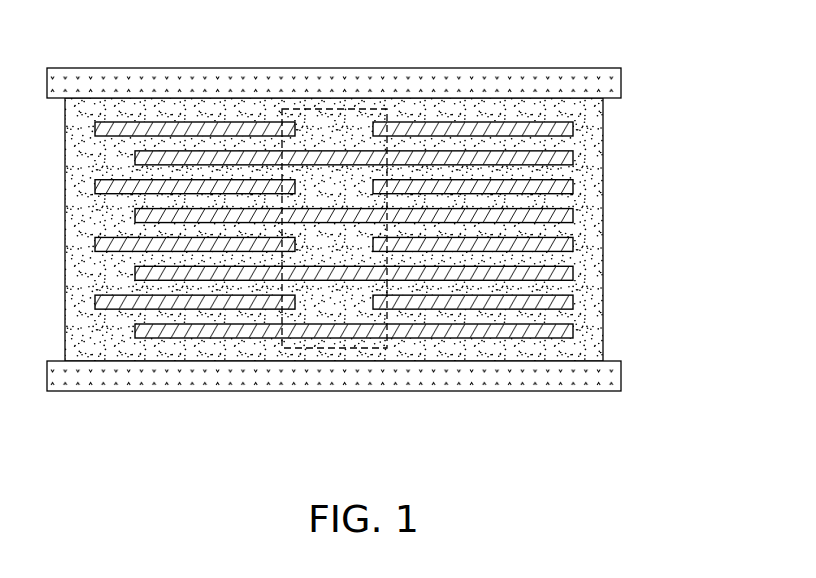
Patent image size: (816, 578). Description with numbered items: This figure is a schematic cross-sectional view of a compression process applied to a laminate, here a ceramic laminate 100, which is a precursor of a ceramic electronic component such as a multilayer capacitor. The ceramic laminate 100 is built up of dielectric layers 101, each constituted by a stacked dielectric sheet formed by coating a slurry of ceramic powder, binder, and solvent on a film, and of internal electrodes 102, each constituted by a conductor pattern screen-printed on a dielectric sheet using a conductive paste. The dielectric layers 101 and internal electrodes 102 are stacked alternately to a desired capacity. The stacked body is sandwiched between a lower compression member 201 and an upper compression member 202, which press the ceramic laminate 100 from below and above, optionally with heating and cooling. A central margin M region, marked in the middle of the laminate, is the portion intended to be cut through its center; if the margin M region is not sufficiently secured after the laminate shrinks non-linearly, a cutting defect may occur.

The ceramic laminate 100 is at (395, 230).
The dielectric layer 101 is at (602, 314).
The internal electrode 102 is at (572, 268).
The lower compression member 201 is at (621, 375).
The upper compression member 202 is at (621, 83).
The margin region M is at (330, 349).